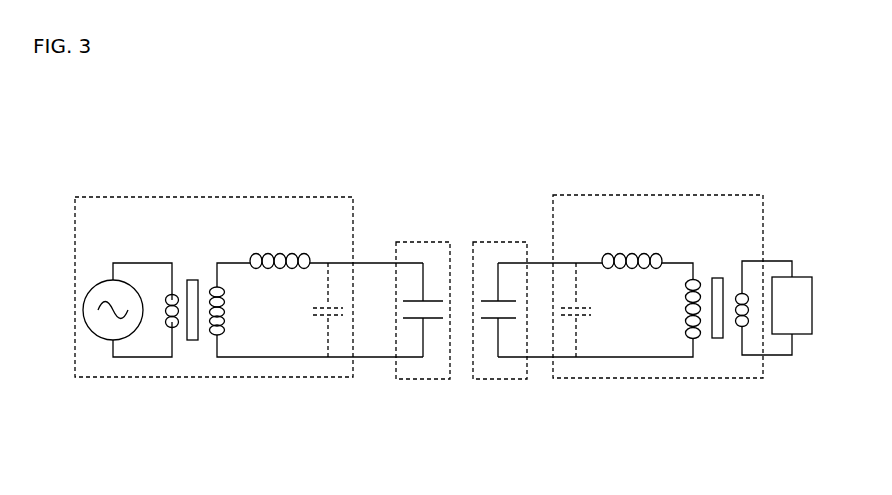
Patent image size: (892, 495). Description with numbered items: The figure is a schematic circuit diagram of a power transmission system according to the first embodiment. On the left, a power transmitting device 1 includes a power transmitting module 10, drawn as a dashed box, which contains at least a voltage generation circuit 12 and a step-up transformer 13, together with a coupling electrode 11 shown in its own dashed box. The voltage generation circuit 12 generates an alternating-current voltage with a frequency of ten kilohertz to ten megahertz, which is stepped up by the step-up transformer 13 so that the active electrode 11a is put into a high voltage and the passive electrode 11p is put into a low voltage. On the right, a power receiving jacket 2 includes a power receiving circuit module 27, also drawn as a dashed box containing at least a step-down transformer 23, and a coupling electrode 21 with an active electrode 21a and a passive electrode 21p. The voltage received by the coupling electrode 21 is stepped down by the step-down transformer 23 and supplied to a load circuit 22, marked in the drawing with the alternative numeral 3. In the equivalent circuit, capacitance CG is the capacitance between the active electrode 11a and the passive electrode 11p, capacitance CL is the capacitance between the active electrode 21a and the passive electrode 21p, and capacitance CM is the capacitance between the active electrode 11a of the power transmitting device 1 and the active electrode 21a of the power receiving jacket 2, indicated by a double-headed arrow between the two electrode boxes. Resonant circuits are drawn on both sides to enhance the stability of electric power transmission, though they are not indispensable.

The power transmitting device 1 is at (238, 178).
The power transmitting module 10 is at (305, 196).
The coupling electrode 11 is at (433, 380).
The active electrode 11a is at (414, 300).
The passive electrode 11p is at (413, 320).
The voltage generation circuit 12 is at (86, 300).
The step-up transformer 13 is at (193, 345).
The power receiving jacket 2 is at (683, 176).
The coupling electrode 21 is at (489, 380).
The active electrode 21a is at (508, 300).
The passive electrode 21p is at (507, 320).
The load circuit 22 is at (813, 288).
The load 3 is at (792, 305).
The step-down transformer 23 is at (717, 345).
The power receiving circuit module 27 is at (617, 195).
The capacitance CG is at (410, 312).
The capacitance CL is at (512, 312).
The capacitance CM is at (437, 241).